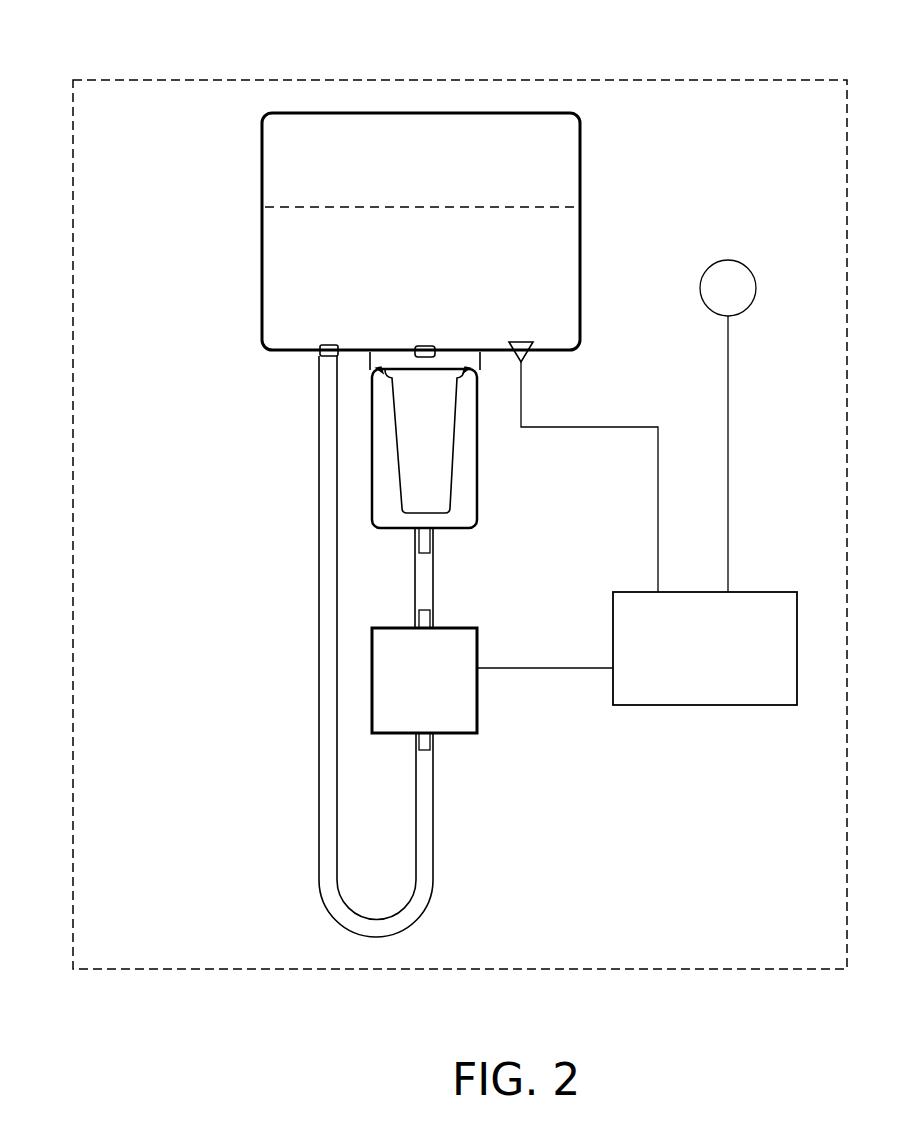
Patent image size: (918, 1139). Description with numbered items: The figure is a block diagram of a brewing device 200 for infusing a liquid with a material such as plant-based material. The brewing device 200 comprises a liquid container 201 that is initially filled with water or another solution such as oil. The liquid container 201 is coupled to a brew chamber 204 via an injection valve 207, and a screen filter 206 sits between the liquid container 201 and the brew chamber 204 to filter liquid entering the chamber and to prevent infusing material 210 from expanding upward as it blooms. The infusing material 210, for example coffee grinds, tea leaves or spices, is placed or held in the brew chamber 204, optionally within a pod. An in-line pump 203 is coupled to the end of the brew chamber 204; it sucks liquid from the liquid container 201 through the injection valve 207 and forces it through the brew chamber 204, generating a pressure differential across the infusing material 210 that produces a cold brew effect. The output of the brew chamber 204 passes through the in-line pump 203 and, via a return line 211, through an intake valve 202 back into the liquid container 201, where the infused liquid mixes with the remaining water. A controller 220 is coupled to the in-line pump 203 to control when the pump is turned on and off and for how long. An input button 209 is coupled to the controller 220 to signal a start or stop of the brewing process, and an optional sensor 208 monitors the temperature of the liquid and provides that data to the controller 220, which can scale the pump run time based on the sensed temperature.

The brewing device 200 is at (166, 98).
The liquid container 201 is at (284, 181).
The intake valve 202 is at (318, 355).
The in-line pump 203 is at (400, 688).
The brew chamber 204 is at (388, 524).
The screen filter 206 is at (366, 360).
The injection valve 207 is at (422, 340).
The sensor 208 is at (528, 352).
The input button 209 is at (720, 276).
The infusing material 210 is at (410, 497).
The return line 211 is at (319, 847).
The controller 220 is at (637, 648).